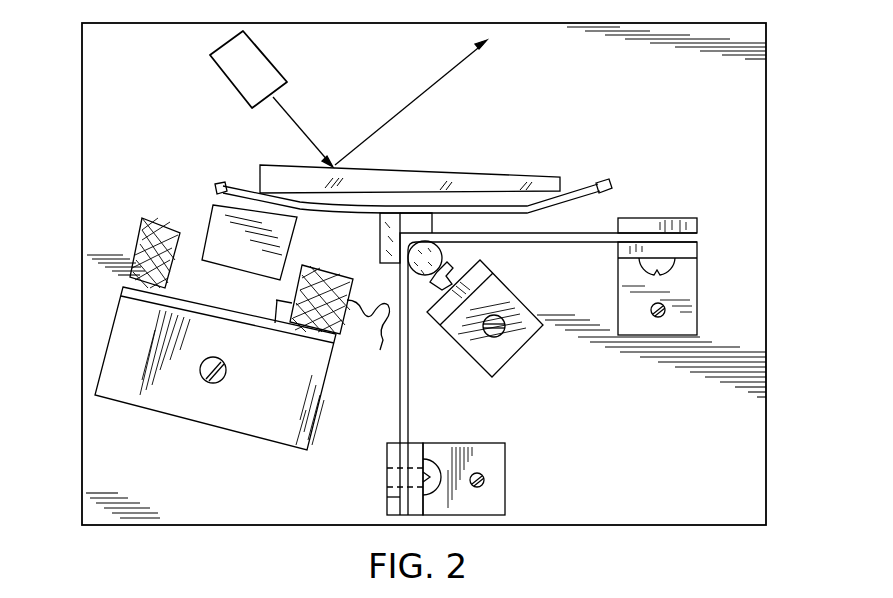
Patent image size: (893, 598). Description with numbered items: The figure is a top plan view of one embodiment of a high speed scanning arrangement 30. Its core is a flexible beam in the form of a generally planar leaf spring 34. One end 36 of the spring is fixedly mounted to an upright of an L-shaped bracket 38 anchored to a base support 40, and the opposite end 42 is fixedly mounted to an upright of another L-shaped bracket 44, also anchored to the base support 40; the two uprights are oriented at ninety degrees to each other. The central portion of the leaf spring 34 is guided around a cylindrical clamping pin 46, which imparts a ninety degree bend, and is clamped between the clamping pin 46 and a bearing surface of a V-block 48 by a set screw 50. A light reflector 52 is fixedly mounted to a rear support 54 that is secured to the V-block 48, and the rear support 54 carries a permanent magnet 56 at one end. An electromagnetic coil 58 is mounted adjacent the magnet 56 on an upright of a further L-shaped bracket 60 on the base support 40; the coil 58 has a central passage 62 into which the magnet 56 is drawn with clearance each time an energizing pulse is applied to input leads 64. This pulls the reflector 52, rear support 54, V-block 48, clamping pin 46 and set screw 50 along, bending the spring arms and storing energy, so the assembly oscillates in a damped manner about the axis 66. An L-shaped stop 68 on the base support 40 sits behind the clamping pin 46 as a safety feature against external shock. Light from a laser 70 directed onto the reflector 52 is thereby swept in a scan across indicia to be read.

The high speed scanning arrangement 30 is at (64, 58).
The leaf spring 34 is at (577, 245).
The one end of leaf spring 36 is at (387, 497).
The L-shaped bracket 38 is at (447, 445).
The base support 40 is at (757, 327).
The opposite end of leaf spring 42 is at (683, 218).
The L-shaped bracket 44 is at (677, 282).
The clamping pin 46 is at (442, 250).
The V-block 48 is at (380, 247).
The set screw 50 is at (433, 278).
The light reflector 52 is at (548, 180).
The rear support 54 is at (602, 183).
The permanent magnet 56 is at (218, 184).
The electromagnetic coil 58 is at (150, 217).
The L-shaped bracket 60 is at (316, 392).
The central passage 62 is at (283, 302).
The input leads 64 is at (368, 338).
The axis 66 is at (397, 226).
The L-shaped stop 68 is at (510, 347).
The laser 70 is at (276, 70).